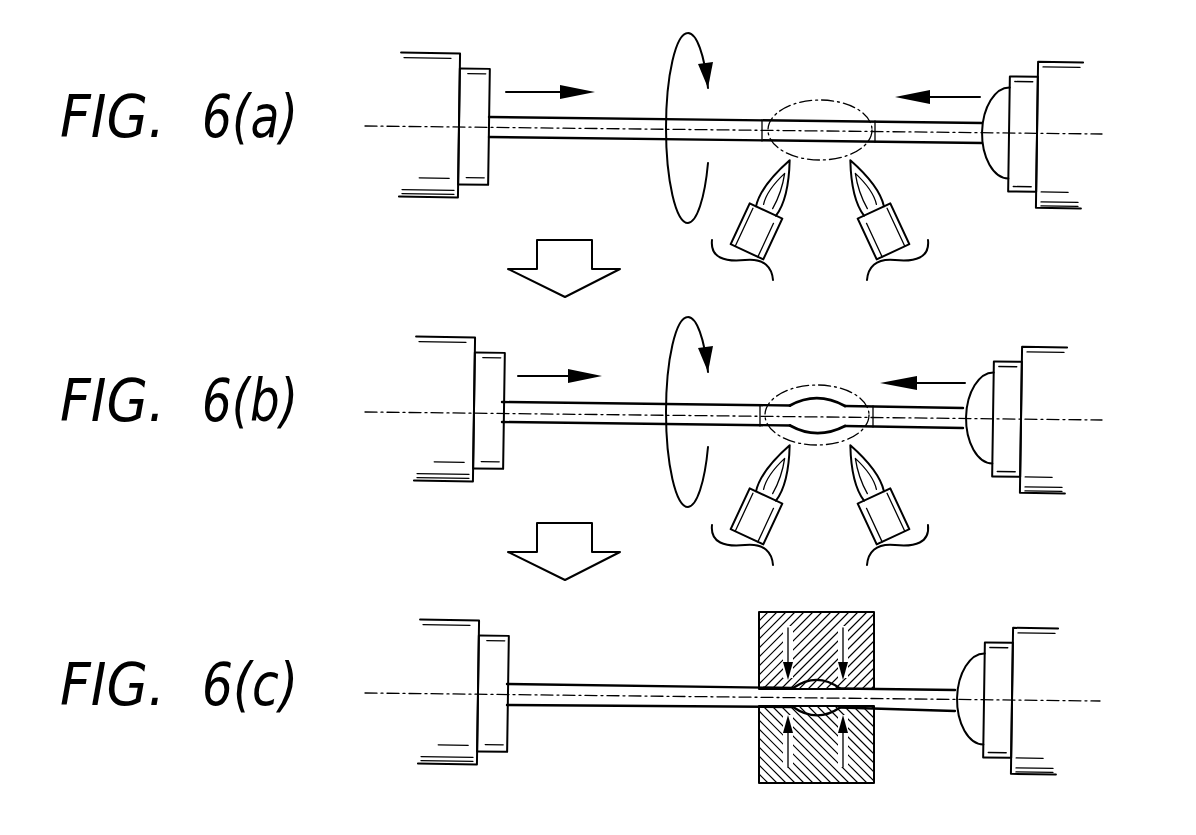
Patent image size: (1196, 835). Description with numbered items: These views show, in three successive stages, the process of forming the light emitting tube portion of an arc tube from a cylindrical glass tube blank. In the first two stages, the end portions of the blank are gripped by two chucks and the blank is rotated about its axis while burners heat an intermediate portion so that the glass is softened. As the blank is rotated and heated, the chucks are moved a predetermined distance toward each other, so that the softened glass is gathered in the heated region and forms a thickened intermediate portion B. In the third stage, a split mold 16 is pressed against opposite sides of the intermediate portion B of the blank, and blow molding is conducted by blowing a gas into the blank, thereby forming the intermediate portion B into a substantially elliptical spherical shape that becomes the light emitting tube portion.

The intermediate portion B is at (811, 400).
The split mold 16 is at (930, 772).